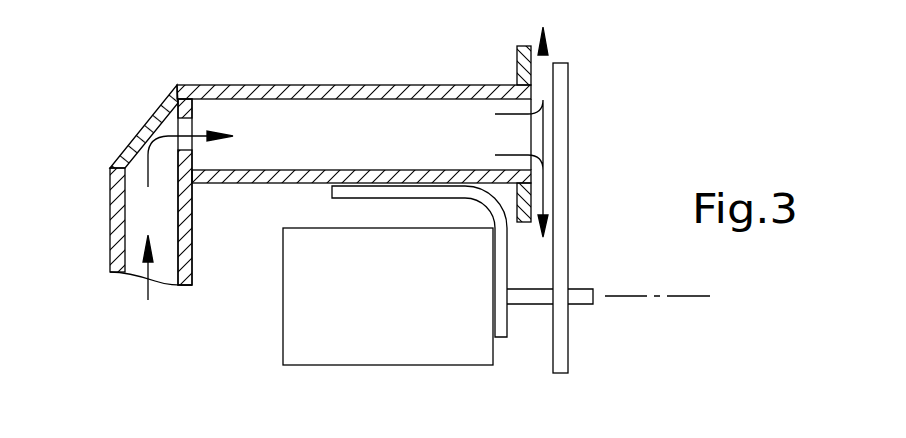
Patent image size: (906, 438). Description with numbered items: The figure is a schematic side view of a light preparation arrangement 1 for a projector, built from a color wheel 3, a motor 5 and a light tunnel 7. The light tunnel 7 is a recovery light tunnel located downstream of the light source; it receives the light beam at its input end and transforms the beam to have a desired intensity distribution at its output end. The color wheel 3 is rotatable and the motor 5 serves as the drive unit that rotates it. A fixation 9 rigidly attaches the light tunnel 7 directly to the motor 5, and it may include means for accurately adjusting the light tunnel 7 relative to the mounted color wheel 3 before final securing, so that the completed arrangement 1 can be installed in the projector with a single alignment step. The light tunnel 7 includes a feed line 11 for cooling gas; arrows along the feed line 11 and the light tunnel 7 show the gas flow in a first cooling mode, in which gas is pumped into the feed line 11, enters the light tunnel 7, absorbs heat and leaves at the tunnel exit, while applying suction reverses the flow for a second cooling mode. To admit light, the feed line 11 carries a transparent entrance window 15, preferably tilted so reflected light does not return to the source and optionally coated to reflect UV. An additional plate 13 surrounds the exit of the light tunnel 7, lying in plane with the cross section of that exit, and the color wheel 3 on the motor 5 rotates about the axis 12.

The light preparation arrangement 1 is at (229, 58).
The color wheel 3 is at (560, 78).
The motor 5 is at (295, 343).
The light tunnel 7 is at (363, 85).
The fixation 9 is at (495, 250).
The feed line 11 is at (115, 247).
The axis 12 is at (625, 296).
The plate 13 is at (517, 52).
The entrance window 15 is at (153, 117).